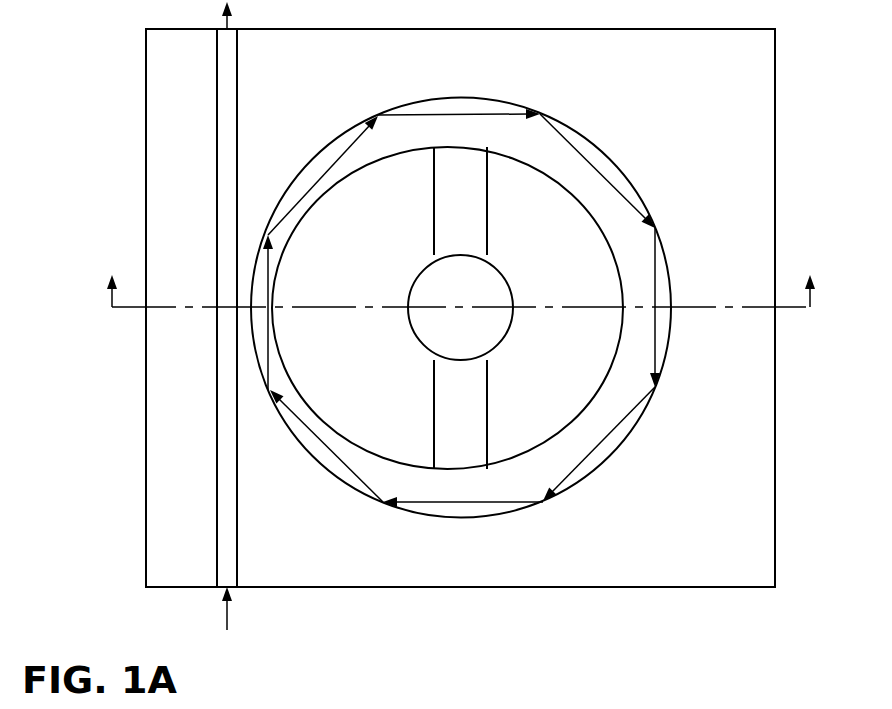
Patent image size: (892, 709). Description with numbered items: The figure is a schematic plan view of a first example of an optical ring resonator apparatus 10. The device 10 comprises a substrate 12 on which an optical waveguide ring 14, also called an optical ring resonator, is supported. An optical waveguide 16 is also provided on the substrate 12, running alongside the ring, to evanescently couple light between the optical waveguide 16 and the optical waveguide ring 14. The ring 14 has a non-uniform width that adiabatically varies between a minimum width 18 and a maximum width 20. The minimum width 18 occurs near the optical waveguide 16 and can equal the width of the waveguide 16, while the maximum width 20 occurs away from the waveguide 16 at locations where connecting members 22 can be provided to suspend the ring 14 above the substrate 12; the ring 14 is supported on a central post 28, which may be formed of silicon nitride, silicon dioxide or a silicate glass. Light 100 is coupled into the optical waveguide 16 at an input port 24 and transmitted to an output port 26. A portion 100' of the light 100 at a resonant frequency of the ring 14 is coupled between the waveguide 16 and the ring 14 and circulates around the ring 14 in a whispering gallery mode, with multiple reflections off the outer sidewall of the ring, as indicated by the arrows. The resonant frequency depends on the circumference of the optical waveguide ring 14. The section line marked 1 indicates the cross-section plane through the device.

The optical ring resonator apparatus 10 is at (742, 606).
The substrate 12 is at (166, 554).
The optical waveguide ring 14 is at (610, 458).
The optical waveguide 16 is at (240, 498).
The minimum width 18 is at (276, 312).
The maximum width 20 is at (461, 98).
The connecting members 22 is at (449, 218).
The input port 24 is at (240, 585).
The output port 26 is at (240, 33).
The post 28 is at (449, 341).
The light 100 is at (260, 317).
The resonant light 100' is at (689, 307).
The section line 1- 1 is at (460, 276).